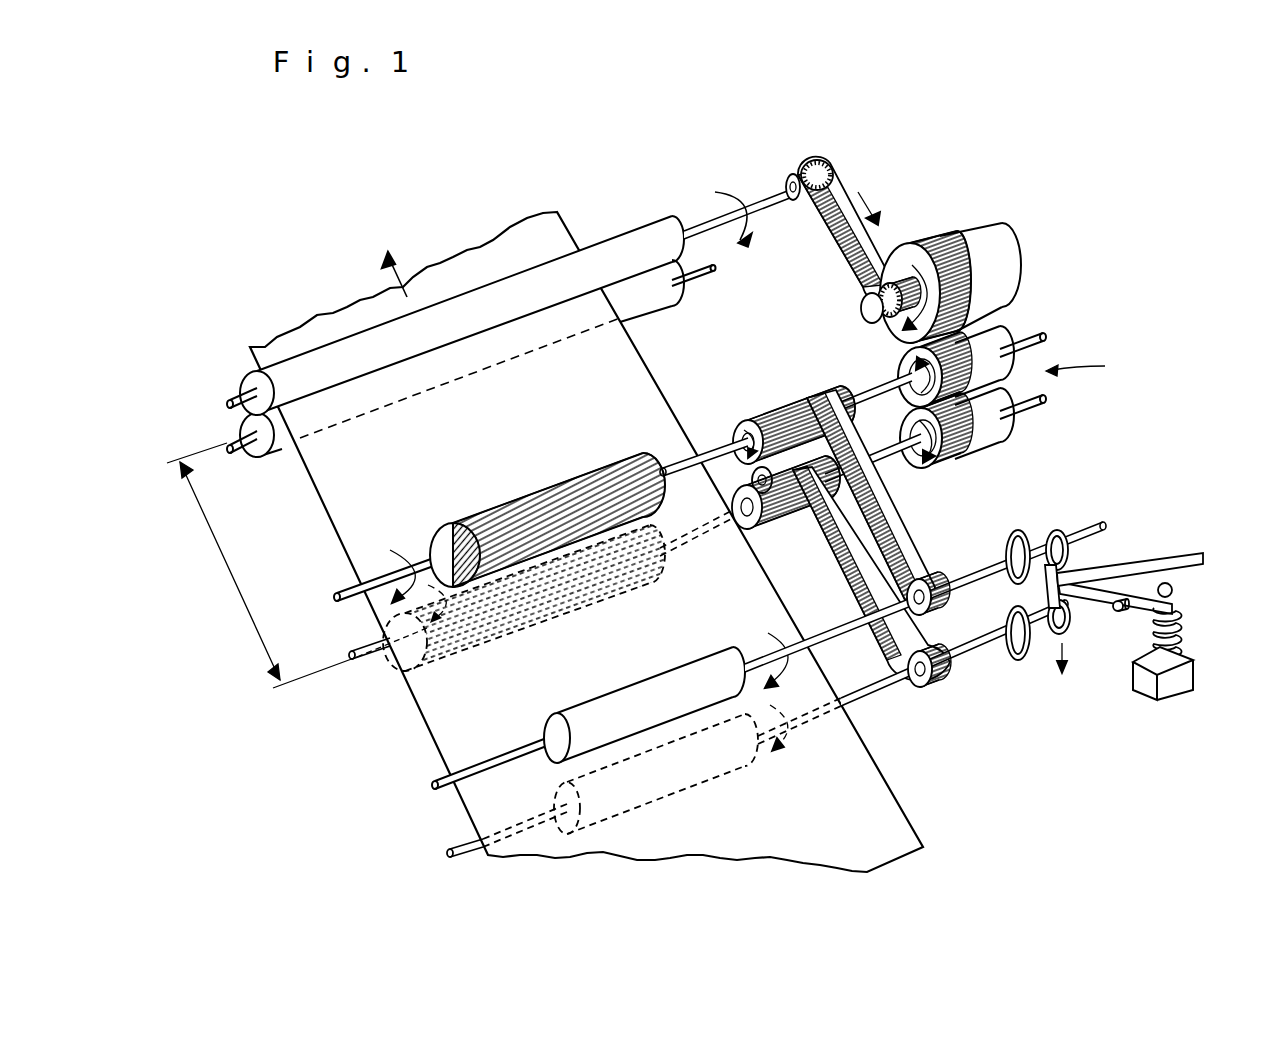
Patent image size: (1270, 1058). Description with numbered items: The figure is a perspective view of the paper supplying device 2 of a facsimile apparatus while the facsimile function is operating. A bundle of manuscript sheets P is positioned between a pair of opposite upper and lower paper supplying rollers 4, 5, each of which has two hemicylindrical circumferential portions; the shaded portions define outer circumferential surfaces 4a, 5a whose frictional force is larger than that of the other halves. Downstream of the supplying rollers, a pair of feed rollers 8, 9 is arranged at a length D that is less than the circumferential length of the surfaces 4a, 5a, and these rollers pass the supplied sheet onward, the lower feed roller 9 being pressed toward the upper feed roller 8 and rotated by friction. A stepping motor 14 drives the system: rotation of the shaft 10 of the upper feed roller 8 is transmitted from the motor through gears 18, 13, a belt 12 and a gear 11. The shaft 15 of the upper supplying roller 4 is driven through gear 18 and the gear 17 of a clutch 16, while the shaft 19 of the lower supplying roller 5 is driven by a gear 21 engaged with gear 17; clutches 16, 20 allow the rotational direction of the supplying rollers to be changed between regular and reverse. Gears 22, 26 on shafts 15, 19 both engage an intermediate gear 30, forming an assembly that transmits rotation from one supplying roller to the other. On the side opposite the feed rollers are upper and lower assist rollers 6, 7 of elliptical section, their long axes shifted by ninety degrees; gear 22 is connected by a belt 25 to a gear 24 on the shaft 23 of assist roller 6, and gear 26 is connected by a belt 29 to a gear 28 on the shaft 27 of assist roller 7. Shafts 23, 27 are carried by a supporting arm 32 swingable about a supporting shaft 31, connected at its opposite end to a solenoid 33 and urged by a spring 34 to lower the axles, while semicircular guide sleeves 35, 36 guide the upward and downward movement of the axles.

The paper supplying device 2 is at (1087, 362).
The upper paper supplying roller 4 is at (499, 511).
The outer circumferential surface 4a is at (520, 510).
The lower paper supplying roller 5 is at (507, 625).
The outer circumferential surface 5a is at (550, 603).
The upper assist roller 6 is at (660, 683).
The lower assist roller 7 is at (722, 770).
The upper feed roller 8 is at (607, 247).
The lower feed roller 9 is at (643, 297).
The shaft 10 is at (743, 183).
The gear 11 is at (838, 230).
The belt 12 is at (838, 258).
The gear 13 is at (862, 311).
The stepping motor 14 is at (1003, 268).
The shaft 15 is at (712, 455).
The clutch 16 is at (997, 363).
The gear 17 is at (900, 364).
The gear 18 is at (923, 240).
The shaft 19 is at (703, 540).
The clutch 20 is at (992, 435).
The gear 21 is at (967, 448).
The gear 22 is at (775, 410).
The shaft 23 is at (930, 640).
The gear 24 is at (937, 582).
The belt 25 is at (895, 507).
The gear 26 is at (790, 500).
The shaft 27 is at (858, 703).
The gear 28 is at (947, 663).
The belt 29 is at (937, 627).
The intermediate gear 30 is at (753, 417).
The supporting shaft 31 is at (1122, 613).
The supporting arm 32 is at (1100, 577).
The solenoid 33 is at (1147, 687).
The spring 34 is at (1177, 635).
The guide sleeve 35 is at (1020, 535).
The guide sleeve 36 is at (1027, 652).
The length D is at (297, 565).
The manuscript sheet P is at (337, 527).